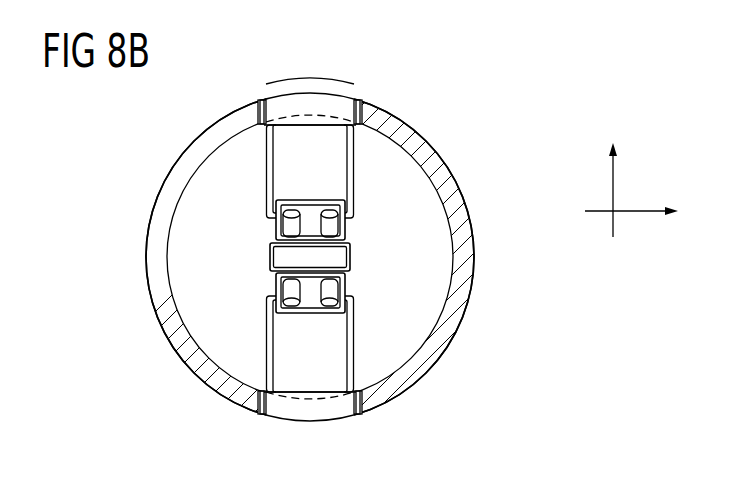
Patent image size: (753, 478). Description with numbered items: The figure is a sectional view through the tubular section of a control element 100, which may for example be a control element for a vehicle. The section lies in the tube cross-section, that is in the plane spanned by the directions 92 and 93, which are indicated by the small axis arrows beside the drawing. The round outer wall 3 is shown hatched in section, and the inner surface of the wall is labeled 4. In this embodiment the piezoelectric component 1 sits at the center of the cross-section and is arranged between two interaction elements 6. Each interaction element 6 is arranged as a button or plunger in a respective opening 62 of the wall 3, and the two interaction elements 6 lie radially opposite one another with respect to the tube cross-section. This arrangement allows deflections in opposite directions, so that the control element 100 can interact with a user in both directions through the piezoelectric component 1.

The control element 100 is at (486, 126).
The piezoelectric component 1 is at (333, 220).
The wall 3 is at (160, 284).
The inner surface of housing 4 is at (180, 242).
The interaction element 6 is at (336, 157).
The opening 62 is at (358, 112).
The direction 92 is at (613, 188).
The direction 93 is at (640, 213).